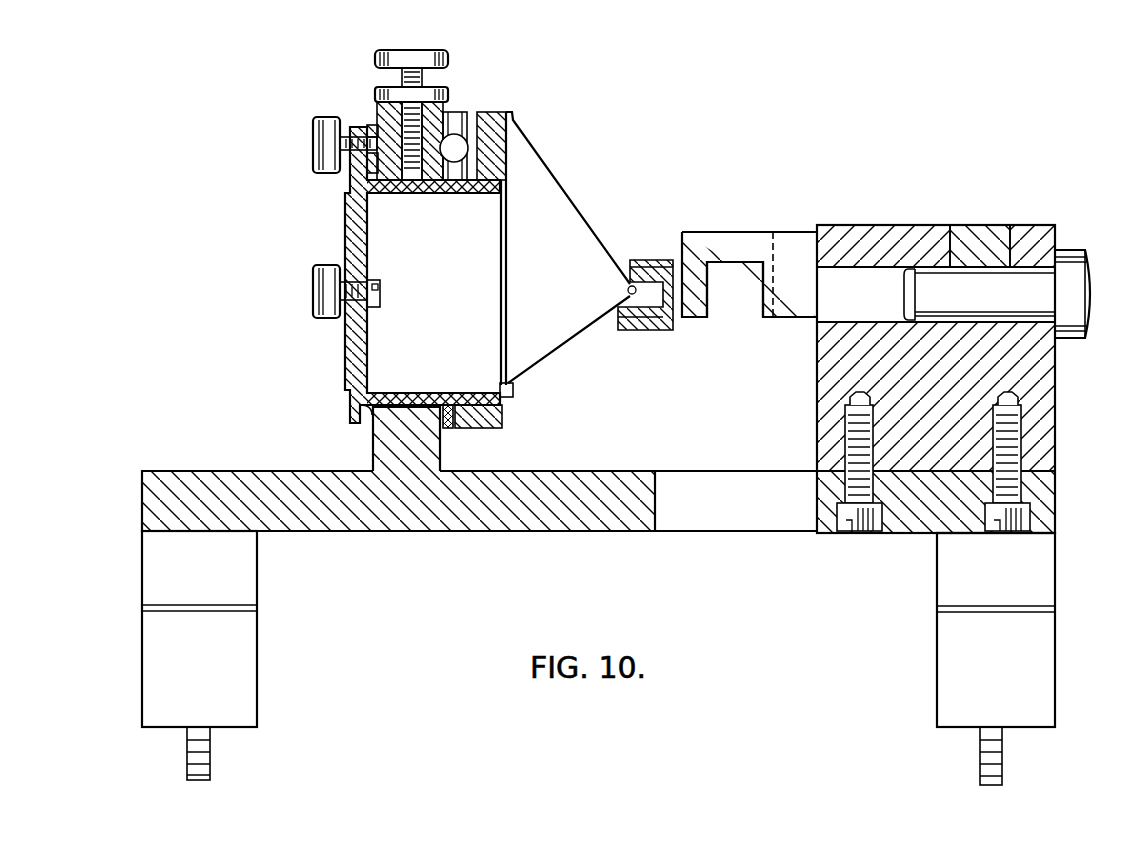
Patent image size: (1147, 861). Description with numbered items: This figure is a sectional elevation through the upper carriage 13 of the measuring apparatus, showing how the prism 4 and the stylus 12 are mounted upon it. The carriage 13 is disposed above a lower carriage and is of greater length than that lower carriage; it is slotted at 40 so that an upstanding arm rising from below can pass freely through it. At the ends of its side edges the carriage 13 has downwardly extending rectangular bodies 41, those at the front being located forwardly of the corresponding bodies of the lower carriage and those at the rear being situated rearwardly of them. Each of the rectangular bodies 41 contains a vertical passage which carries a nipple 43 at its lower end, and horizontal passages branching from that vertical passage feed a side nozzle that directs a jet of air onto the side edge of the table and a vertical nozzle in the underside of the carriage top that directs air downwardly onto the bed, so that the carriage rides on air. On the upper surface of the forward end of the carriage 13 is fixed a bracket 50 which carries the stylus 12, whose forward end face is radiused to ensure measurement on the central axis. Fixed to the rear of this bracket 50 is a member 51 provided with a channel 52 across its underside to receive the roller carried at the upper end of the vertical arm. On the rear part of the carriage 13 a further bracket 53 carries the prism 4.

The prism 4 is at (562, 207).
The stylus 12 is at (1088, 280).
The carriage 13 is at (142, 508).
The slot 40 is at (745, 483).
The downwardly extending rectangular bodies 41 is at (150, 658).
The nipple 43 is at (212, 762).
The bracket 50 is at (938, 232).
The member 51 is at (785, 238).
The channel 52 is at (750, 297).
The bracket 53 is at (373, 448).